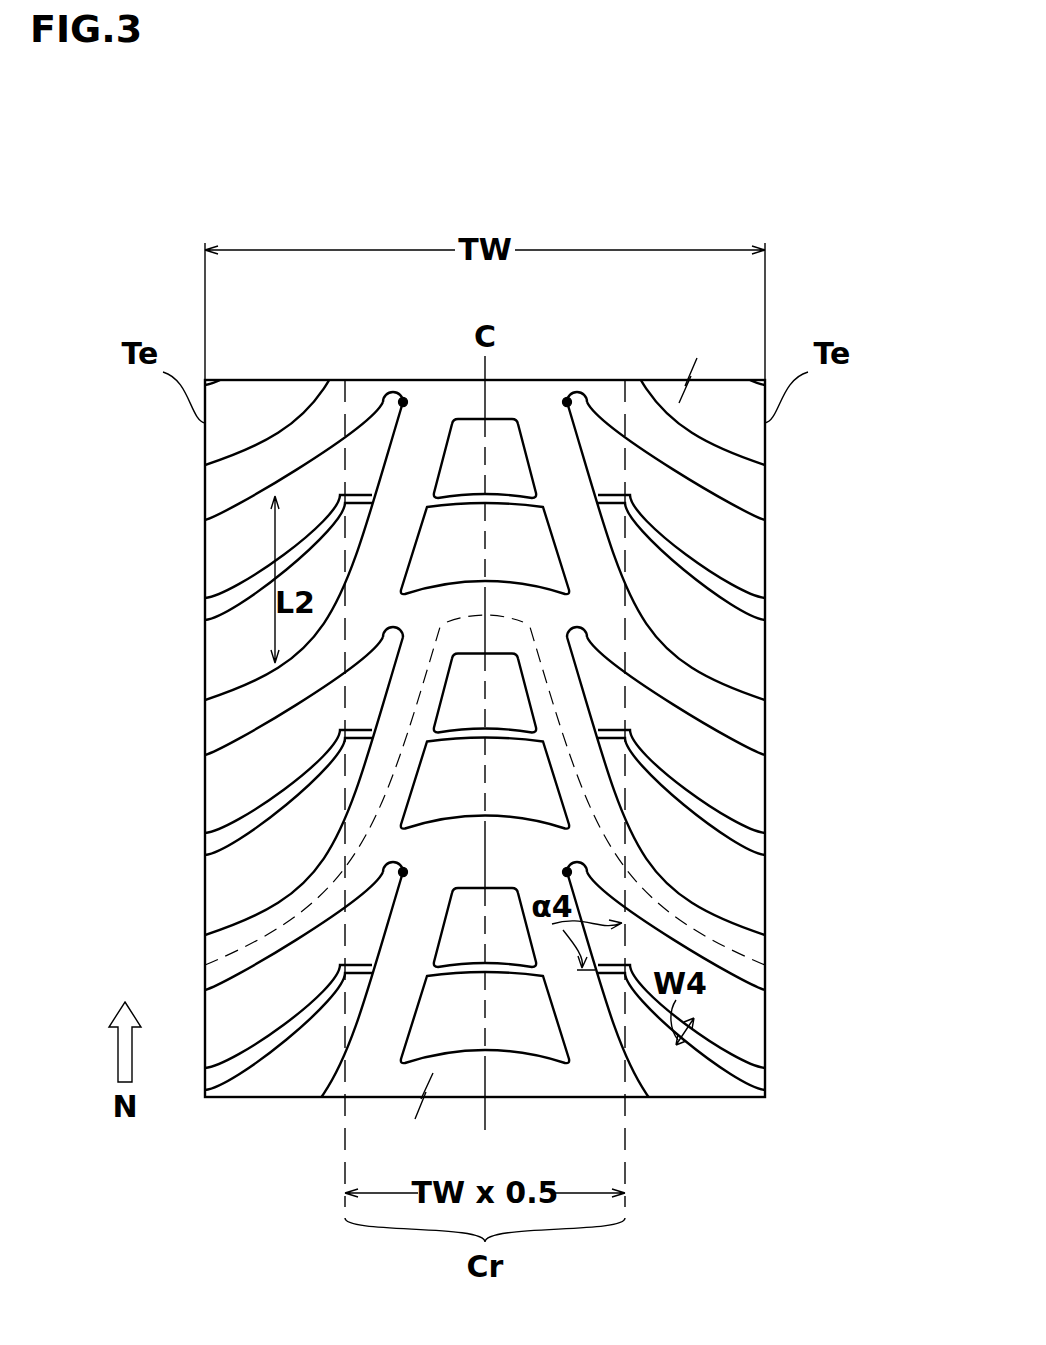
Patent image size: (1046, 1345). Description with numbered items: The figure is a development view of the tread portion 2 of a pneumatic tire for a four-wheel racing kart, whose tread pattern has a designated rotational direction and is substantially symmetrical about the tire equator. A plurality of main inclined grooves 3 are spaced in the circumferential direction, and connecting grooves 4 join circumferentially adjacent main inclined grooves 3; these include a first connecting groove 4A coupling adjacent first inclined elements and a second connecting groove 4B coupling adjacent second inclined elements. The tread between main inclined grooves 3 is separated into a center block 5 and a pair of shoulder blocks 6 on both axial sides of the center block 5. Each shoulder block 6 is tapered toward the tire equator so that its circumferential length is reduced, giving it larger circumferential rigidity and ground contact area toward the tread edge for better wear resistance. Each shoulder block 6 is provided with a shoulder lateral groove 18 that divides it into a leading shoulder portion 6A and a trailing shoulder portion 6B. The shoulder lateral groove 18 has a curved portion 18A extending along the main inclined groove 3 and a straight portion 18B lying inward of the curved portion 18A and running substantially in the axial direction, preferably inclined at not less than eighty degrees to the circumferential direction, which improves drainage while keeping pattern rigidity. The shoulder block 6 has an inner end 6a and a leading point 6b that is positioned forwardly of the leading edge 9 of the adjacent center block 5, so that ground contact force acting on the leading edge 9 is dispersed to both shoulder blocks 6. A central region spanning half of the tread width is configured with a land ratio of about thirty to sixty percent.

The tread portion 2 is at (808, 311).
The main inclined groove 3 is at (251, 724).
The connecting groove 4 is at (537, 668).
The first connecting groove 4A is at (588, 618).
The second connecting groove 4B is at (396, 592).
The center block 5 is at (462, 1038).
The shoulder block 6 is at (476, 691).
The leading shoulder portion 6A is at (240, 555).
The trailing shoulder portion 6B is at (477, 746).
The inner end of shoulder lateral groove 6a is at (403, 402).
The leading point 6b is at (403, 872).
The leading edge 9 is at (473, 887).
The shoulder lateral groove 18 is at (554, 675).
The curved portion 18A is at (691, 563).
The straight portion 18B is at (620, 500).